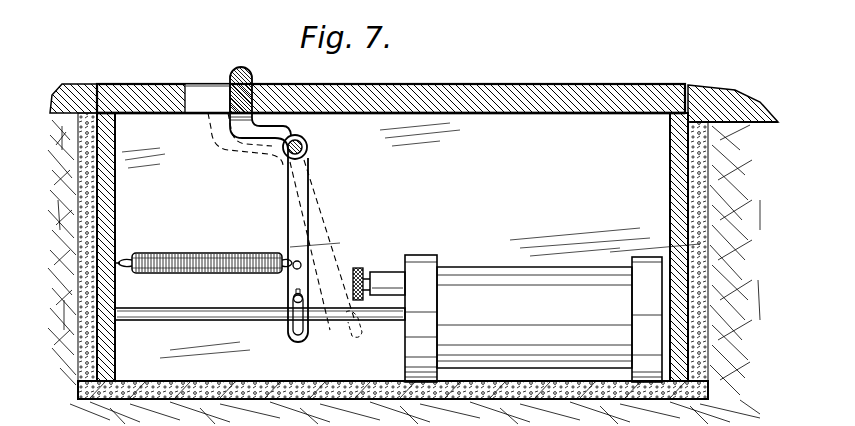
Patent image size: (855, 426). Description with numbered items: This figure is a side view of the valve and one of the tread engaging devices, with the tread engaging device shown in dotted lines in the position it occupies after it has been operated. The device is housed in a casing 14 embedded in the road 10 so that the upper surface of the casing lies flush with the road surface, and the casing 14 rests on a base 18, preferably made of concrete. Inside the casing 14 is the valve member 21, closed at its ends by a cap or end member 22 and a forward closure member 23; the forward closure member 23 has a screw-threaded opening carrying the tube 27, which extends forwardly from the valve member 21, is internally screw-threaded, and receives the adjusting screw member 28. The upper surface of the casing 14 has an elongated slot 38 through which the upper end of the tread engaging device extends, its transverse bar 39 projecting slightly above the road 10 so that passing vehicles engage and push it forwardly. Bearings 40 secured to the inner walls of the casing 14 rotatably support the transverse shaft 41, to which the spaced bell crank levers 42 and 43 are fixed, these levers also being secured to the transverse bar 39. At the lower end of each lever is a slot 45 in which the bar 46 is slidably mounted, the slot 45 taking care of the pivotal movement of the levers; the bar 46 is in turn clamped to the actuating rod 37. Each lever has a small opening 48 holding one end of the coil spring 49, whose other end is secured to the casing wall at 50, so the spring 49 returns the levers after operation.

The road 10 is at (76, 88).
The casing 14 is at (110, 198).
The base 18 is at (138, 386).
The valve member 21 is at (534, 317).
The cap or end member 22 is at (647, 319).
The forward closure member 23 is at (421, 318).
The tube 27 is at (386, 278).
The adjusting screw member 28 is at (360, 278).
The actuating rod 37 is at (207, 321).
The elongated slot 38 is at (195, 86).
The transverse bar 39 is at (251, 78).
The bearing 40 is at (306, 136).
The transverse shaft 41 is at (308, 147).
The bell crank lever 42 is at (310, 218).
The bell crank lever 43 is at (300, 222).
The slot 45 is at (303, 325).
The bar 46 is at (292, 297).
The small opening 48 is at (300, 263).
The coil spring 49 is at (182, 258).
The spring attachment point 50 is at (118, 256).